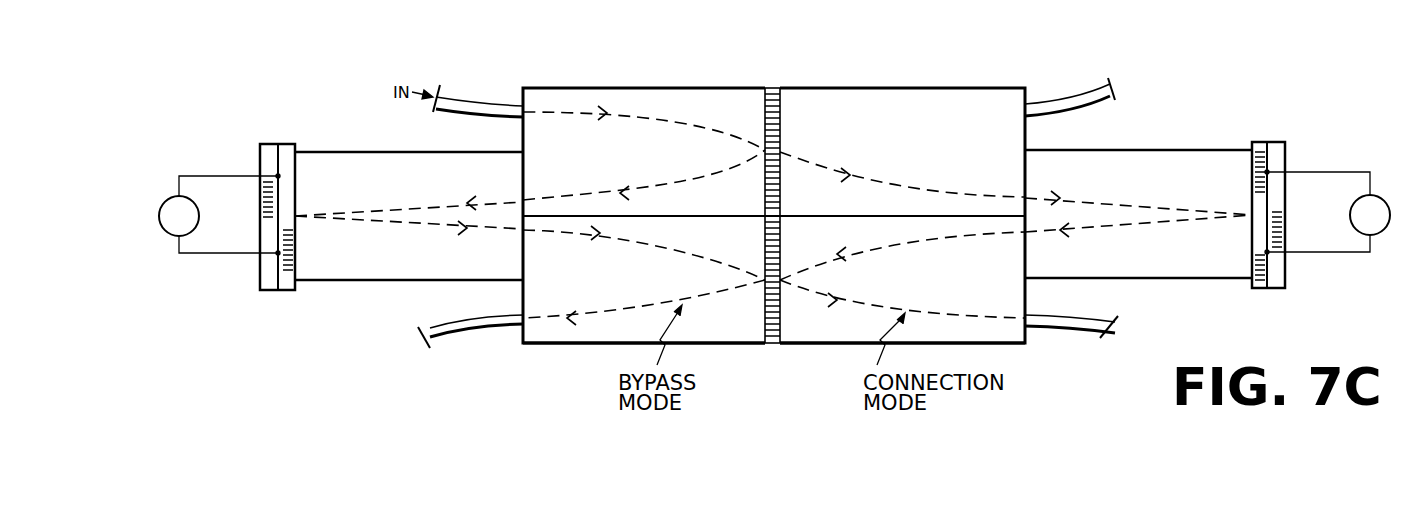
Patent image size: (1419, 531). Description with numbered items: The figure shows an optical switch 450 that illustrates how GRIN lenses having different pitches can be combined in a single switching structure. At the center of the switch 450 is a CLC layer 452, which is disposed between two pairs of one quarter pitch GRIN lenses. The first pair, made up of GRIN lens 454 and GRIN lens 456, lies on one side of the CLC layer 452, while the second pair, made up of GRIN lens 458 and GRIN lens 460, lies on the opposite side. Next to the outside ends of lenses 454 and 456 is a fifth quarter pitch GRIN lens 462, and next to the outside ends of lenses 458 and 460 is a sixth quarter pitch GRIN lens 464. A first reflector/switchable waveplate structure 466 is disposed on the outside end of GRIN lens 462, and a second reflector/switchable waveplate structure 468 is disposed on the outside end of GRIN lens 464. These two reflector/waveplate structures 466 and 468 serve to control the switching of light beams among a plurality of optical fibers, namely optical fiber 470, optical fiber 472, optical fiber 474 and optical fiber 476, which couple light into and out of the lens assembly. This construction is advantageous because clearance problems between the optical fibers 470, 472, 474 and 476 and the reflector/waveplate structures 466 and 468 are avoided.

The optical switch 450 is at (1037, 33).
The CLC layer 452 is at (772, 88).
The quarter pitch GRIN lens 454 is at (610, 95).
The quarter pitch GRIN lens 456 is at (745, 330).
The quarter pitch GRIN lens 458 is at (882, 100).
The quarter pitch GRIN lens 460 is at (1010, 335).
The fifth quarter pitch GRIN lens 462 is at (398, 270).
The sixth quarter pitch GRIN lens 464 is at (1187, 262).
The first reflector/switchable waveplate structure 466 is at (298, 137).
The second reflector/switchable waveplate structure 468 is at (1291, 137).
The optical fiber 470 is at (475, 102).
The optical fiber 472 is at (493, 325).
The optical fiber 474 is at (1072, 97).
The optical fiber 476 is at (1090, 330).